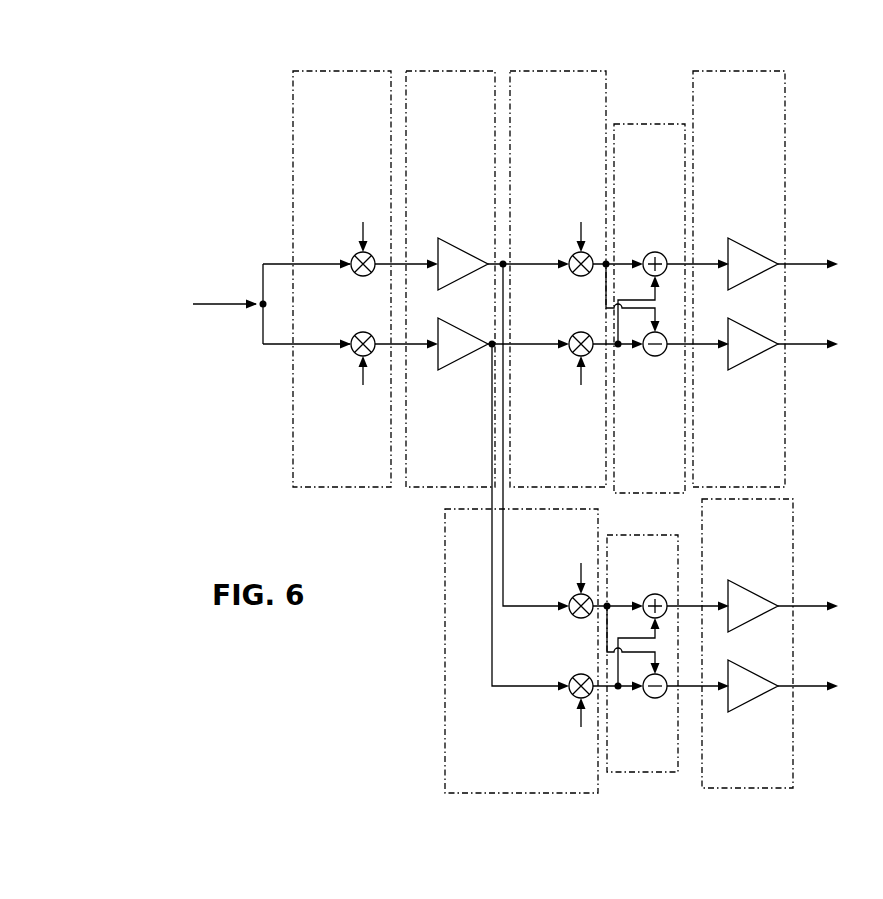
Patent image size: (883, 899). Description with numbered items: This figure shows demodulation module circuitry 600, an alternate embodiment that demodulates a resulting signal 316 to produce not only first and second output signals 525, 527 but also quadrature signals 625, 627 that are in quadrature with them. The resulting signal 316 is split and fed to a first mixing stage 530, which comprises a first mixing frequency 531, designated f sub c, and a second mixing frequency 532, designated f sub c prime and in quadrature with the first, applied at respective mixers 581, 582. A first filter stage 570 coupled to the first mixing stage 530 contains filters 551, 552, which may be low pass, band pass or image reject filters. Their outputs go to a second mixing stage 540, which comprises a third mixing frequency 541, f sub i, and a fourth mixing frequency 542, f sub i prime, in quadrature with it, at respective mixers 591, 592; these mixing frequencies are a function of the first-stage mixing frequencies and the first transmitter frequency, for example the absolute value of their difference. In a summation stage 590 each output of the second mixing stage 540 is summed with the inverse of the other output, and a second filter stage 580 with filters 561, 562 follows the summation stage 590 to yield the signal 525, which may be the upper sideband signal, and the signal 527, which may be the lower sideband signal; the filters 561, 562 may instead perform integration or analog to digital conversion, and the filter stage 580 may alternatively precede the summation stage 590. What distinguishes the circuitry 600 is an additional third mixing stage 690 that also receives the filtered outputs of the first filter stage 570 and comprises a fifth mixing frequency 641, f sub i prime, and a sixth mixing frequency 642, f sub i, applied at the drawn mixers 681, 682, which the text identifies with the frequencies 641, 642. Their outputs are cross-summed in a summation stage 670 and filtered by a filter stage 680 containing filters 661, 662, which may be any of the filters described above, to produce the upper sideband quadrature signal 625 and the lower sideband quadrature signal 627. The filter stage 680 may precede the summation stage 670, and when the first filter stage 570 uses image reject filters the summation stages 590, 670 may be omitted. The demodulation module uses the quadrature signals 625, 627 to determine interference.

The demodulation module circuitry 600 is at (217, 143).
The resulting signal 316 is at (224, 298).
The first mixing stage 530 is at (336, 70).
The first mixing frequency 531 is at (352, 241).
The second mixing frequency 532 is at (336, 375).
The mixer 581 is at (356, 276).
The mixer 582 is at (357, 334).
The first filter stage 570 is at (455, 70).
The filter 551 is at (451, 255).
The filter 552 is at (450, 352).
The second mixing stage 540 is at (559, 70).
The third mixing frequency 541 is at (568, 241).
The fourth mixing frequency 542 is at (568, 371).
The mixer 591 is at (573, 277).
The mixer 592 is at (574, 333).
The summation stage 590 is at (656, 124).
The second filter stage 580 is at (740, 70).
The filter 561 is at (751, 255).
The filter 562 is at (750, 352).
The first output signal 525 is at (808, 248).
The second output signal 527 is at (808, 361).
The third mixing stage 690 is at (445, 612).
The fifth mixing frequency 641 is at (567, 584).
The sixth mixing frequency 642 is at (568, 713).
The fifth mixed signal 681 is at (575, 619).
The sixth mixed signal 682 is at (576, 676).
The summation stage 670 is at (662, 775).
The filter stage 680 is at (777, 792).
The filter 661 is at (750, 596).
The filter 662 is at (750, 696).
The quadrature signal 625 is at (808, 590).
The quadrature signal 627 is at (808, 702).